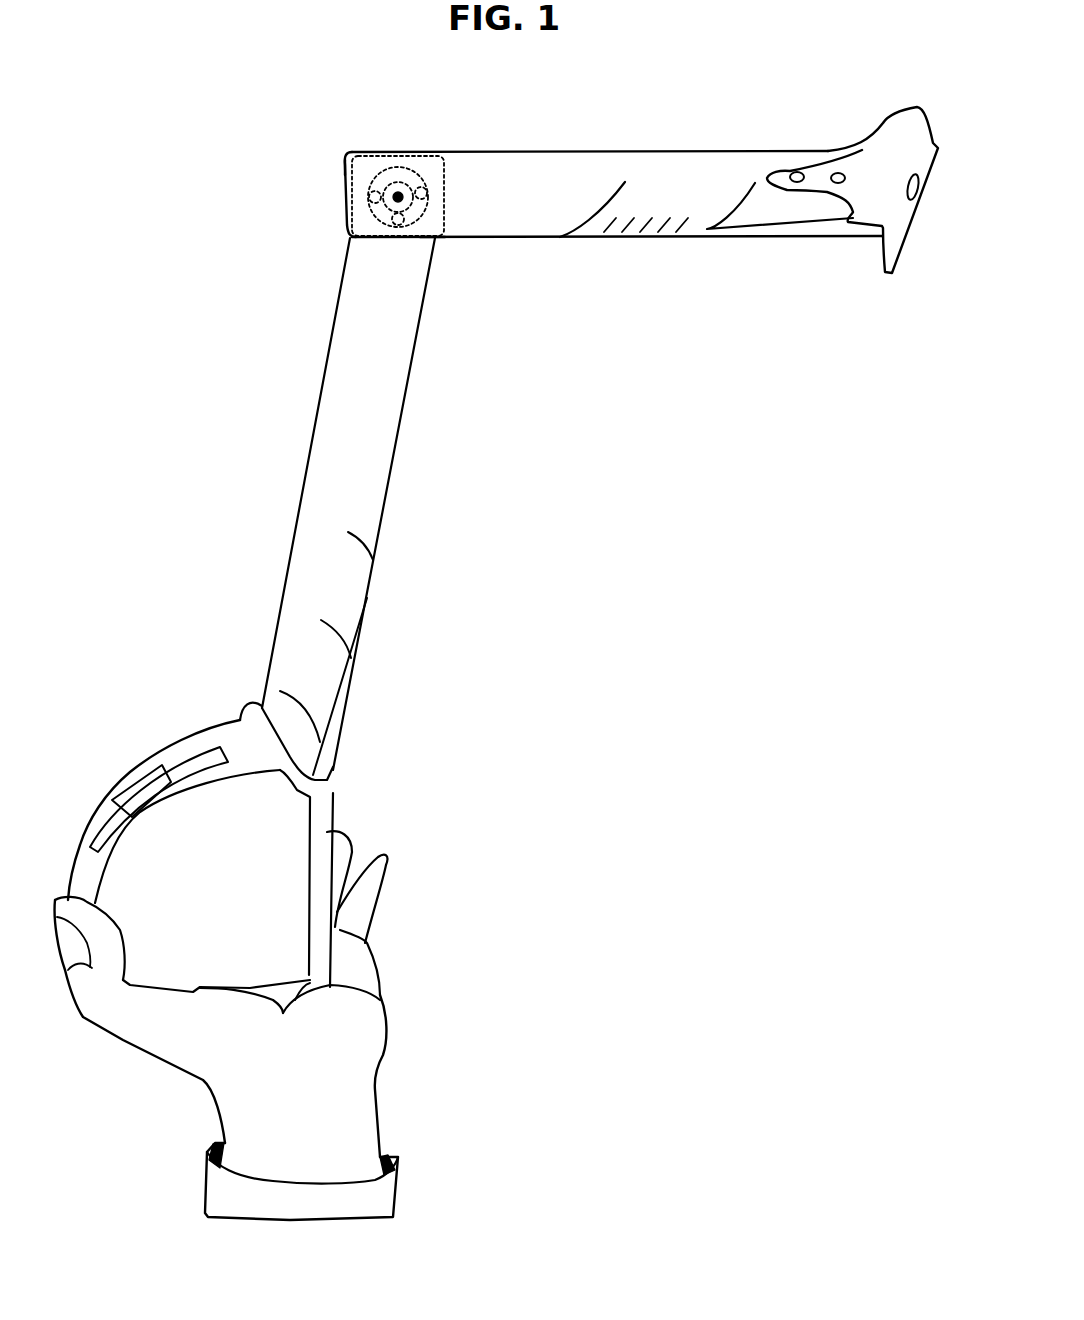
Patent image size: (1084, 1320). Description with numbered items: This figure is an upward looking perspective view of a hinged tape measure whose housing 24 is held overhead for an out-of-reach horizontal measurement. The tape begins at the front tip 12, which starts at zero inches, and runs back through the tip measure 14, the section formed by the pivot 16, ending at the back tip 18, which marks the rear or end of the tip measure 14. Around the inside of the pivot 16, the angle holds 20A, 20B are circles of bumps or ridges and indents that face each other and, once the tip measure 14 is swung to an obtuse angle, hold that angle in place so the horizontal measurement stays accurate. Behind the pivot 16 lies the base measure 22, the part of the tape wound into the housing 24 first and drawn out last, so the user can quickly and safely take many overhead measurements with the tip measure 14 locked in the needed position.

The front tip 12 is at (911, 100).
The tip measure 14 is at (650, 142).
The pivot 16 is at (397, 135).
The back tip 18 is at (340, 222).
The angle hold 20A is at (438, 245).
The angle hold 20B is at (338, 172).
The base measure 22 is at (393, 485).
The housing 24 is at (337, 810).